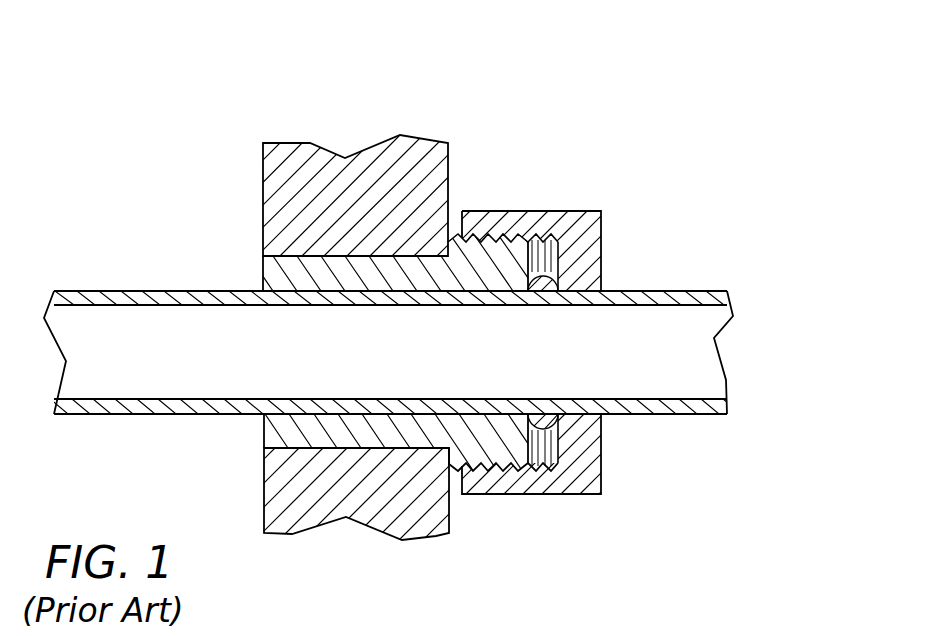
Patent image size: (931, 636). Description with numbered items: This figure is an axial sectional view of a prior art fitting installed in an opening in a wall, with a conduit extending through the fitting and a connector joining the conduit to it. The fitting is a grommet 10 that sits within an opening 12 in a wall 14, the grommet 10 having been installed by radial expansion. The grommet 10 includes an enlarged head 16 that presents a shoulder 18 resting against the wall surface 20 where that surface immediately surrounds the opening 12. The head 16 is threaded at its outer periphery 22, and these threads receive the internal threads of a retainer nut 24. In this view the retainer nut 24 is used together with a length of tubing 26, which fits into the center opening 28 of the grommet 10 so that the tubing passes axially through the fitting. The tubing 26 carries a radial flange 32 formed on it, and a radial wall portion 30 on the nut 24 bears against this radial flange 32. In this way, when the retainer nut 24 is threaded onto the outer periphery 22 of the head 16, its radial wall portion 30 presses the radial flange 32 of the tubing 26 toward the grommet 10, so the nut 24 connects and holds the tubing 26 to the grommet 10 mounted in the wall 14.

The grommet 10 is at (273, 272).
The opening 12 is at (320, 260).
The wall 14 is at (323, 162).
The enlarged head 16 is at (487, 230).
The shoulder 18 is at (447, 250).
The wall surface 20 is at (450, 508).
The outer periphery 22 is at (517, 470).
The retainer nut 24 is at (555, 226).
The tubing 26 is at (684, 297).
The center opening 28 is at (322, 413).
The radial wall portion 30 is at (587, 252).
The radial flange 32 is at (540, 416).